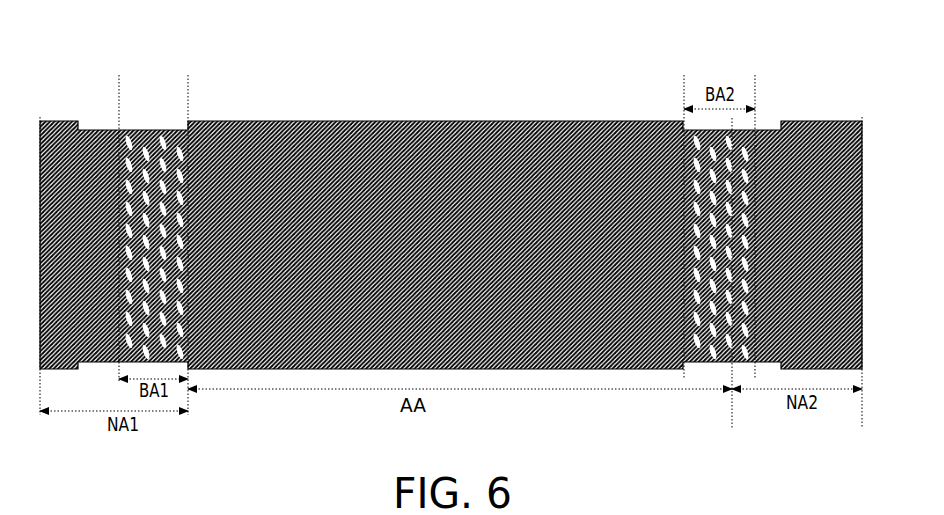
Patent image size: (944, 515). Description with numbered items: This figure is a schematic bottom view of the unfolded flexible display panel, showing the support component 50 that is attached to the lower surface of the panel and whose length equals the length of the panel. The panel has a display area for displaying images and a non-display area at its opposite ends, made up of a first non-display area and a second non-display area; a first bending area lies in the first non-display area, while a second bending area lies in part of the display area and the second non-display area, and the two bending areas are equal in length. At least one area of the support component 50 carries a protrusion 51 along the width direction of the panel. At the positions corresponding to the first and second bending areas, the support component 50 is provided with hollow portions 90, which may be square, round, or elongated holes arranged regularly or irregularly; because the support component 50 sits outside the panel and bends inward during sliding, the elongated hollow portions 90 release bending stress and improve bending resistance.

The support component 50 is at (375, 121).
The protrusion 51 is at (513, 121).
The hollow portions 90 is at (127, 140).